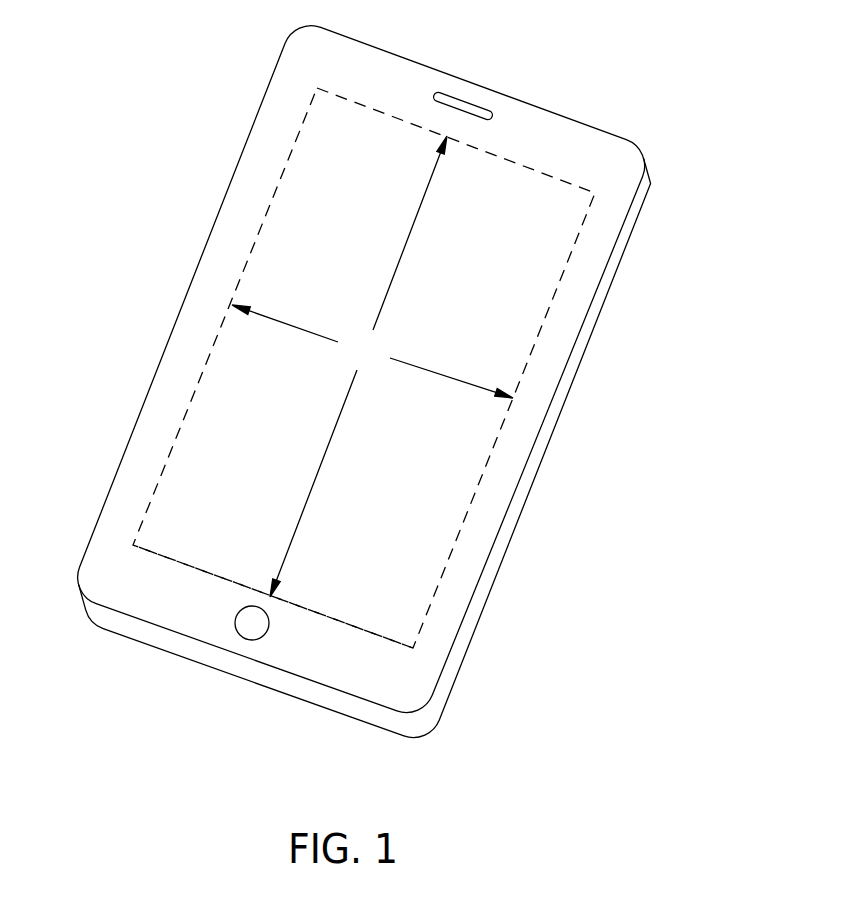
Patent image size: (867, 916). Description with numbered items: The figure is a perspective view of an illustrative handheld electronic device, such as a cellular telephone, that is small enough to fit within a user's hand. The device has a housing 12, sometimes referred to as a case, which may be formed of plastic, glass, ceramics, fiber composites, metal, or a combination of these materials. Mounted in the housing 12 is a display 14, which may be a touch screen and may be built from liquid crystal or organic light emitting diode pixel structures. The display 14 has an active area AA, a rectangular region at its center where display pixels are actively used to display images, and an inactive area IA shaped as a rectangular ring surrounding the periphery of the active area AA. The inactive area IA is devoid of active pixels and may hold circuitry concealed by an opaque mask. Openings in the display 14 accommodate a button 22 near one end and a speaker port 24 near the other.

The housing 12 is at (637, 212).
The display 14 is at (512, 320).
The button 22 is at (252, 640).
The speaker port 24 is at (462, 103).
The active area AA is at (372, 366).
The inactive area IA is at (442, 615).